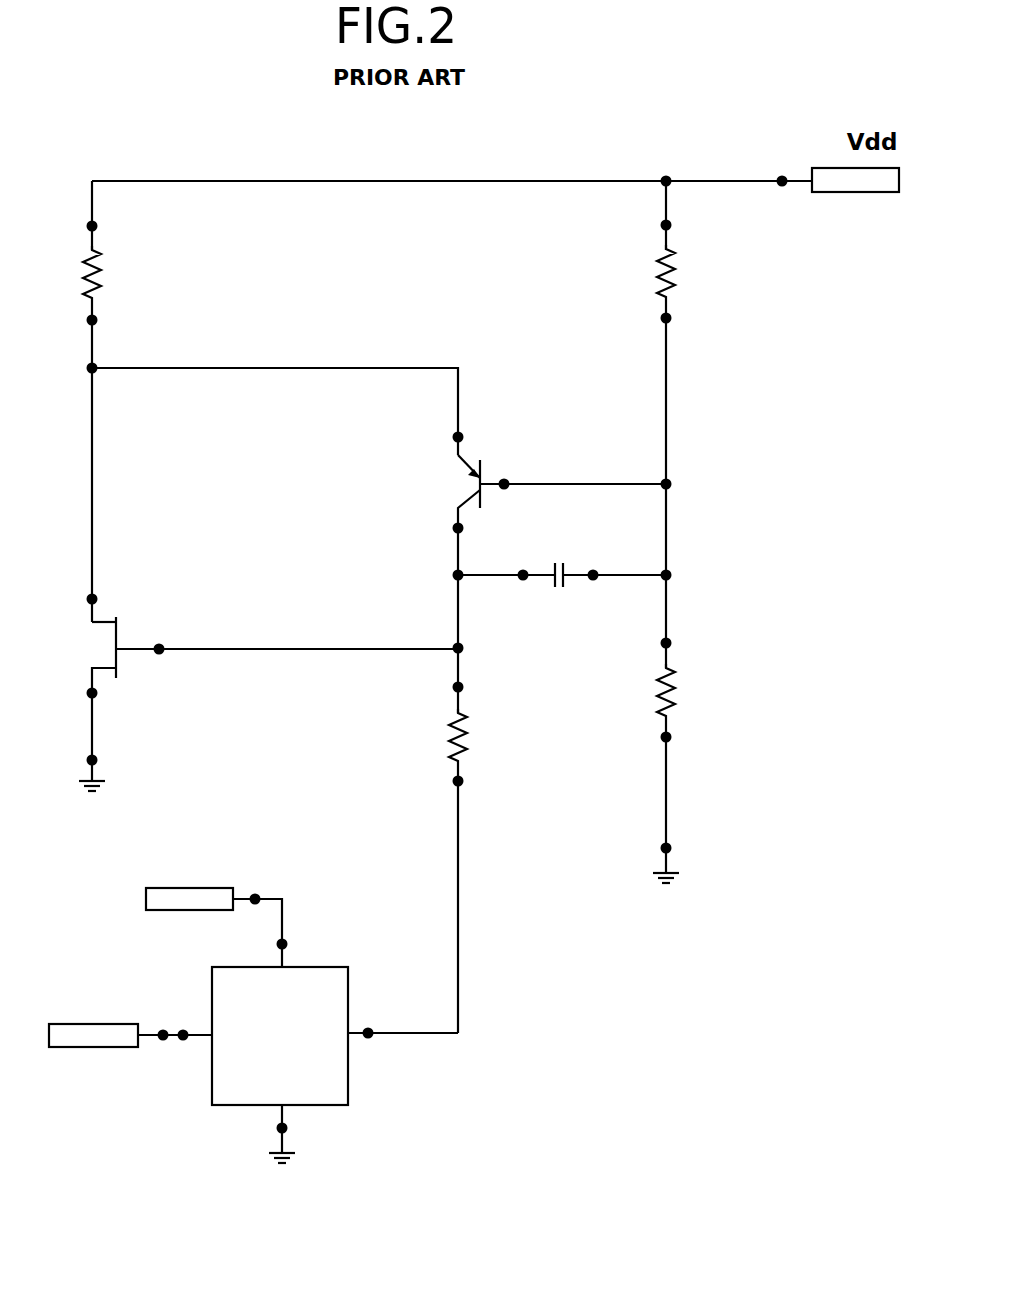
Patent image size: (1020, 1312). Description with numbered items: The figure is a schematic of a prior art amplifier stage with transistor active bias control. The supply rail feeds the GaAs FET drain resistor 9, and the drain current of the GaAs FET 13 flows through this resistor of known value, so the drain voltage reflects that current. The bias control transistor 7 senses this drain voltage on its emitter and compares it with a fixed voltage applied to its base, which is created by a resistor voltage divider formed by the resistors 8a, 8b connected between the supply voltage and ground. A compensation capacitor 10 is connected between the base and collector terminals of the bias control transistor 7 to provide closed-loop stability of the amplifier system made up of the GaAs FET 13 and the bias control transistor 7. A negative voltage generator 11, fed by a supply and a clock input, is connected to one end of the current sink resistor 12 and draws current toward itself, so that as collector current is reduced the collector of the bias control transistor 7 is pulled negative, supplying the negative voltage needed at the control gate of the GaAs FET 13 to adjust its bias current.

The bias control transistor 7 is at (544, 515).
The resistor voltage divider resistor 8a is at (704, 332).
The resistor voltage divider resistor 8b is at (706, 761).
The GaAs FET drain resistor 9 is at (74, 274).
The compensation capacitor 10 is at (562, 597).
The negative voltage generator 11 is at (253, 1006).
The current sink resistor 12 is at (428, 858).
The GaAs FET 13 is at (251, 693).